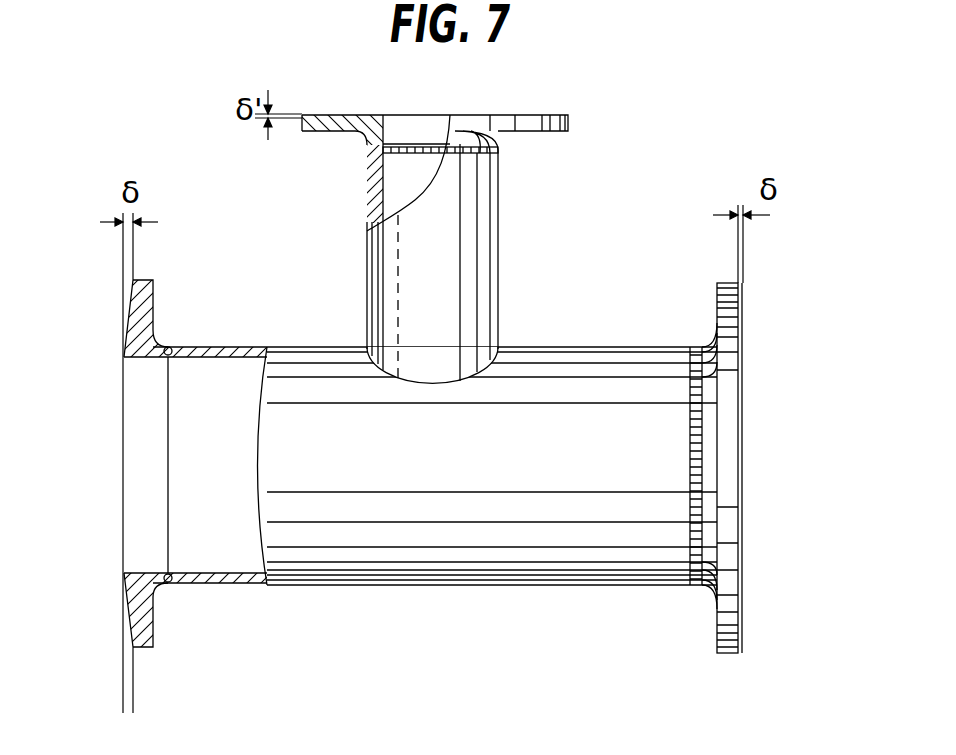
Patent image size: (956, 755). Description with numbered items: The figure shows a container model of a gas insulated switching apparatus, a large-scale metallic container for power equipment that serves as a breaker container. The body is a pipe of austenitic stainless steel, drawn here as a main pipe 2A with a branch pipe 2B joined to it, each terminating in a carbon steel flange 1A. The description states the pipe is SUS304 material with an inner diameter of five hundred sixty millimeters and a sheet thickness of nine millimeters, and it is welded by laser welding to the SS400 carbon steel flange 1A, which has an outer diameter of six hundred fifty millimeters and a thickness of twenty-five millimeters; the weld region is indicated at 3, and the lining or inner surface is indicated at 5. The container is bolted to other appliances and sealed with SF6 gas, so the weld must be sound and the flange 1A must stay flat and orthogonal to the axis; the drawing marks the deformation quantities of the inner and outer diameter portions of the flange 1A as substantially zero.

The carbon steel flange 1A is at (153, 293).
The main pipe body 2A is at (543, 380).
The branch pipe 2B is at (483, 254).
The weld joint 3 is at (168, 345).
The resin lining 5 is at (167, 423).